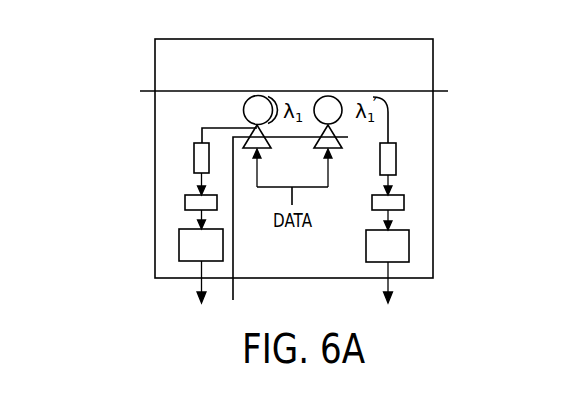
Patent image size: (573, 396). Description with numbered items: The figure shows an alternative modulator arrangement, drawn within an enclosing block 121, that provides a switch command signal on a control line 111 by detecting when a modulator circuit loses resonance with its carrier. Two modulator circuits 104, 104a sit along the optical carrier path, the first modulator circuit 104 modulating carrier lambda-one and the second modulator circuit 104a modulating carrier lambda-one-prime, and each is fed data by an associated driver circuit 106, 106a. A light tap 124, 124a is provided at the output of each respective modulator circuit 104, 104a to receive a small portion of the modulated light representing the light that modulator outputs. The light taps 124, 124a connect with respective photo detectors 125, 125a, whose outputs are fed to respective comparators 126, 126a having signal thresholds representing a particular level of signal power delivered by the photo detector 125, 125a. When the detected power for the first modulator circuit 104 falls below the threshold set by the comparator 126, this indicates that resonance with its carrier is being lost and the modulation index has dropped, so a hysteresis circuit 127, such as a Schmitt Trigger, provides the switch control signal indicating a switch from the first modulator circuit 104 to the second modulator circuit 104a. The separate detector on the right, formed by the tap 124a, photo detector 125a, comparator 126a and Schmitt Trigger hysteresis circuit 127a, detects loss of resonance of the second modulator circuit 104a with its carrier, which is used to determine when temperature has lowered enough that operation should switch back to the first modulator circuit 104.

The housing 121 is at (433, 140).
The first modulator circuit 104 is at (258, 105).
The second modulator circuit 104a is at (327, 105).
The driver circuit 106 is at (261, 150).
The driver circuit 106a is at (330, 150).
The control line 111 is at (233, 283).
The light tap 124 is at (202, 130).
The light tap 124a is at (388, 118).
The photo detector 125 is at (194, 158).
The photo detector 125a is at (396, 160).
The comparator 126 is at (185, 203).
The comparator 126a is at (404, 203).
The hysteresis circuit 127 is at (179, 249).
The hysteresis circuit 127a is at (409, 247).